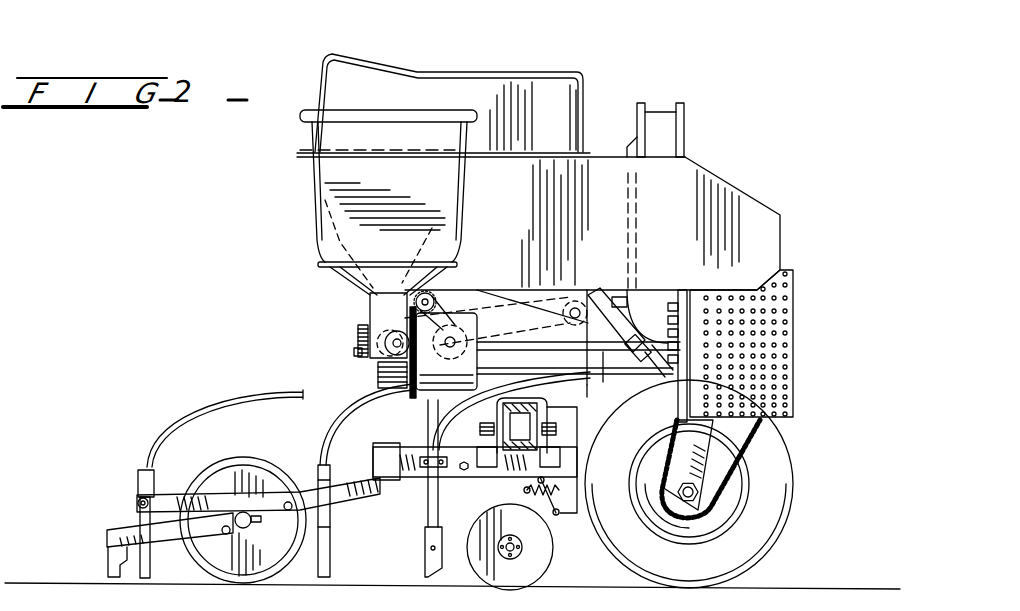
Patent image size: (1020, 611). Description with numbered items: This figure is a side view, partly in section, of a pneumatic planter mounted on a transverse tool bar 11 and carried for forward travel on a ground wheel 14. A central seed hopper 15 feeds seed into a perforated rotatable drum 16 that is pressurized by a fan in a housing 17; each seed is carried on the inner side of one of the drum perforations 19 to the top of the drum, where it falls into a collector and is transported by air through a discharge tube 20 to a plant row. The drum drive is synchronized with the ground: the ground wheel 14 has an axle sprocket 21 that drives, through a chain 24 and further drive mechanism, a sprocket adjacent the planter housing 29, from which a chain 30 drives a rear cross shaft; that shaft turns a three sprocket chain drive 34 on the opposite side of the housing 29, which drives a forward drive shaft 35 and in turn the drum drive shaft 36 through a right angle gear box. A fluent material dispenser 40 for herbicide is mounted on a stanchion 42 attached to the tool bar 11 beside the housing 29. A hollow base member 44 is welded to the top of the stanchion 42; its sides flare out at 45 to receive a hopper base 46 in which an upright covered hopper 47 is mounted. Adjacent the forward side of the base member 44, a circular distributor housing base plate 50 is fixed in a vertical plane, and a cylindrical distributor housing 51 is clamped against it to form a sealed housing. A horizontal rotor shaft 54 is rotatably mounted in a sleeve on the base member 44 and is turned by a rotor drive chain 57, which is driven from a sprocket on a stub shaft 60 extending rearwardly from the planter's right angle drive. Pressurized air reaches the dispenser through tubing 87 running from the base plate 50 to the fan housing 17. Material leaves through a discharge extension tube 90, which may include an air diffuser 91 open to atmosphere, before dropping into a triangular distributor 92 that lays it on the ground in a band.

The tool bar 11 is at (503, 418).
The ground wheel 14 is at (785, 555).
The central seed hopper 15 is at (503, 73).
The perforated rotatable drum 16 is at (793, 292).
The housing 17 is at (660, 112).
The drum perforations 19 is at (786, 333).
The discharge tube 20 is at (466, 522).
The axle sprocket 21 is at (727, 486).
The chain 24 is at (750, 452).
The planter housing 29 is at (761, 264).
The chain 30 is at (548, 300).
The three sprocket chain drive 34 is at (452, 315).
The forward drive shaft 35 is at (461, 338).
The drum drive shaft 36 is at (602, 377).
The fluent material dispenser 40 is at (438, 405).
The stanchion 42 is at (373, 443).
The hollow base member 44 is at (377, 362).
The flared sides 45 is at (350, 294).
The hopper base 46 is at (327, 272).
The upright covered hopper 47 is at (318, 205).
The distributor housing base plate 50 is at (413, 390).
The cylindrical distributor housing 51 is at (414, 400).
The horizontal rotor shaft 54 is at (356, 352).
The rotor drive chain 57 is at (357, 338).
The stub shaft 60 is at (363, 318).
The tubing 87 is at (618, 297).
The discharge extension tube 90 is at (347, 405).
The air diffuser 91 is at (317, 480).
The triangular distributor 92 is at (333, 560).